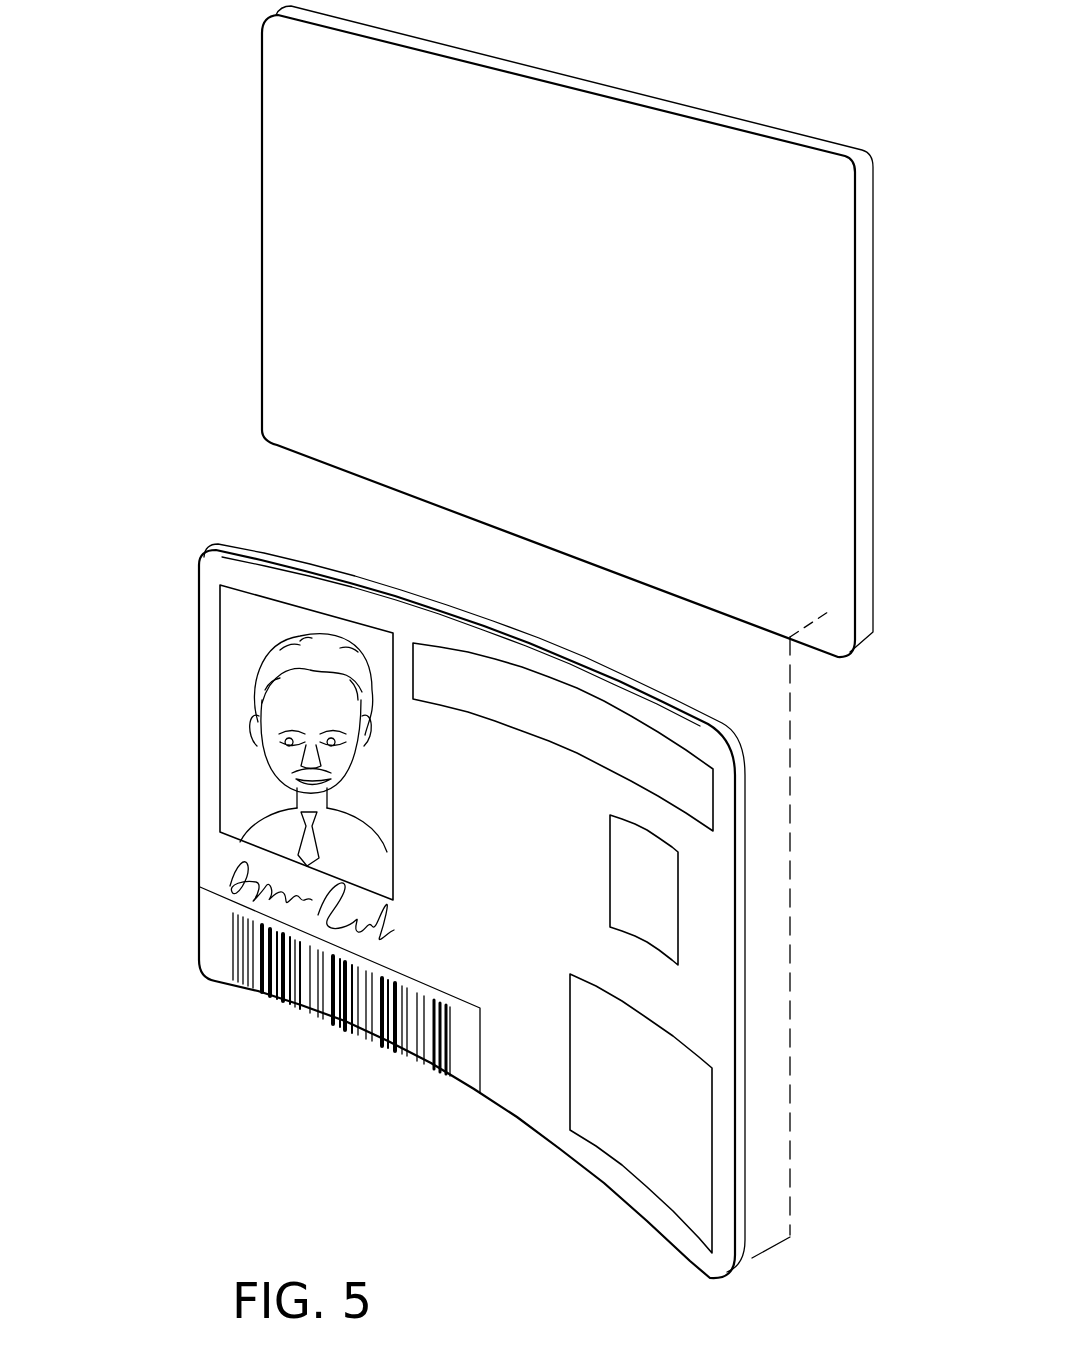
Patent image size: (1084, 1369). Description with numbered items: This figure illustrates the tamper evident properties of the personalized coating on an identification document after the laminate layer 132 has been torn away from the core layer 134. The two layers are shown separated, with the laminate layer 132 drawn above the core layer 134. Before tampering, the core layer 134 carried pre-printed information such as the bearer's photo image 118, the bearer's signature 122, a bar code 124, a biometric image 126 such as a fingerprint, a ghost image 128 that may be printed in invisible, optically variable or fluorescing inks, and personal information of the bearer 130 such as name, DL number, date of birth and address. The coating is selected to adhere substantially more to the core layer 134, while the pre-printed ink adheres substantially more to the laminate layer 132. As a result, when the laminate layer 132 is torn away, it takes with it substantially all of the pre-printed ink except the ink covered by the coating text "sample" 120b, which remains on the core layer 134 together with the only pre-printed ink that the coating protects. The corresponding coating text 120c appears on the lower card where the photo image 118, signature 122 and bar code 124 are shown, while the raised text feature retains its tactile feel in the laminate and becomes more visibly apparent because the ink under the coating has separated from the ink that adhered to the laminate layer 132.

The photo image 118 is at (235, 730).
The coating text "sample" 120b is at (283, 262).
The security text on card body 120c is at (222, 778).
The bearer's signature 122 is at (225, 862).
The bar code 124 is at (207, 942).
The biometric image 126 is at (705, 800).
The ghost image 128 is at (665, 917).
The personal information of the bearer 130 is at (705, 1108).
The laminate layer 132 is at (745, 1245).
The core layer 134 is at (862, 585).